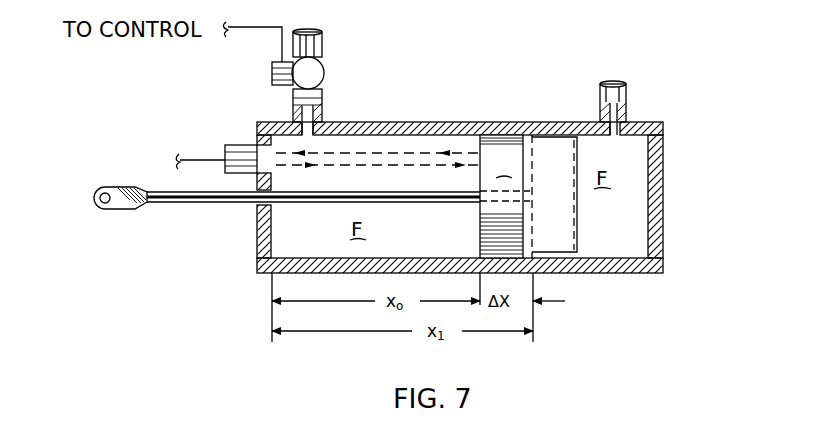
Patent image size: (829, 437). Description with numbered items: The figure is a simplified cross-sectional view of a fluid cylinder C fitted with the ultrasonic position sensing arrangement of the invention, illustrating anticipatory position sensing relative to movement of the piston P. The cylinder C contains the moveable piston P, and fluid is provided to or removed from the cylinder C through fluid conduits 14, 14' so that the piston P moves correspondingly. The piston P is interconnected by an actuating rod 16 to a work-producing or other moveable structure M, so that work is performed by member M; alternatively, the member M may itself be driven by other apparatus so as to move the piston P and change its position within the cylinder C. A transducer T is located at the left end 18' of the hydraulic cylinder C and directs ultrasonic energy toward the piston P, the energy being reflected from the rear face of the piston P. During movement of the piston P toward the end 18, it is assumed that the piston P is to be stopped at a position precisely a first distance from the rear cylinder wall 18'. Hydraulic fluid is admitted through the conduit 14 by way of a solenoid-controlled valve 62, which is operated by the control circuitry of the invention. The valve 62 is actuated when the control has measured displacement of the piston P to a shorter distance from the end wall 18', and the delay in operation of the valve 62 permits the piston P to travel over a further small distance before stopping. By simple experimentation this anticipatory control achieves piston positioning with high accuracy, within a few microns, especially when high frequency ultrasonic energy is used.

The fluid conduit 14 is at (339, 79).
The fluid conduit 14' is at (642, 79).
The actuating rod 16 is at (167, 192).
The cylinder end 18 is at (510, 197).
The left end / rear cylinder wall 18' is at (209, 226).
The solenoid-controlled valve 62 is at (272, 70).
The fluid cylinder C is at (497, 121).
The transducer T is at (240, 145).
The valve V is at (308, 73).
The piston P is at (505, 196).
The moveable structure M is at (117, 208).